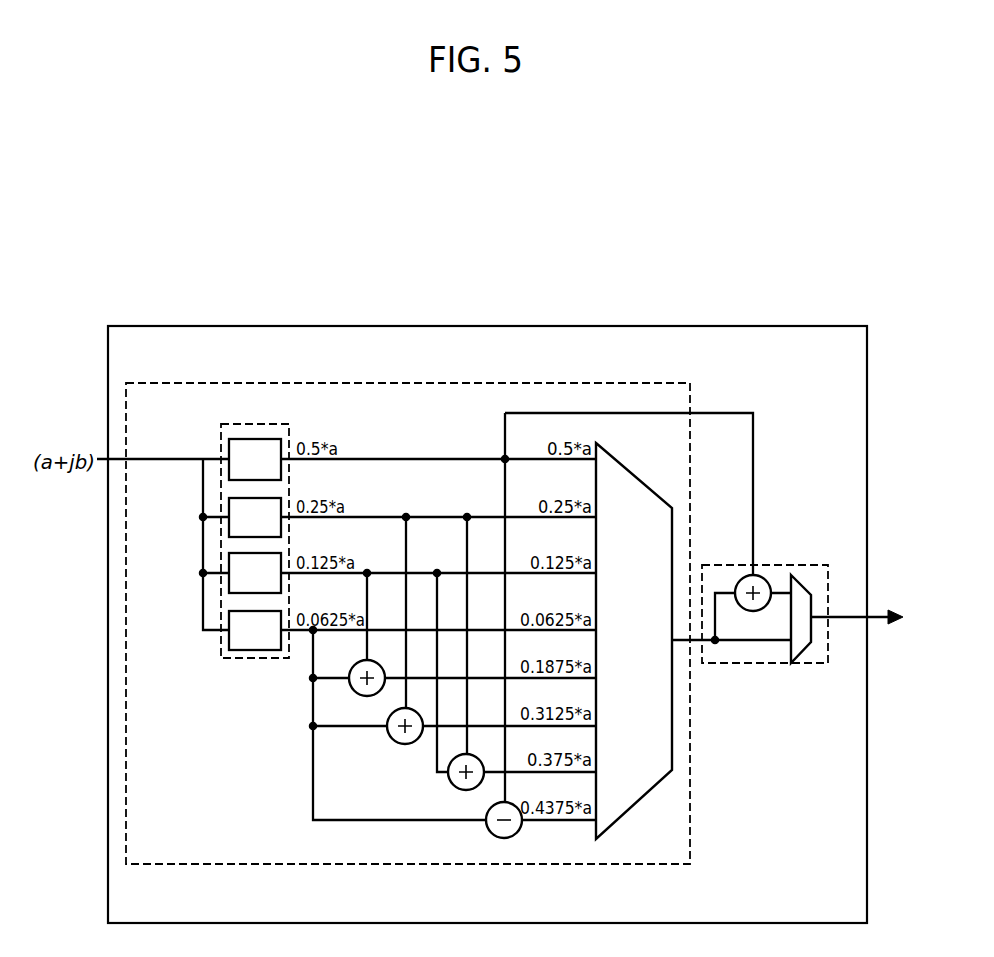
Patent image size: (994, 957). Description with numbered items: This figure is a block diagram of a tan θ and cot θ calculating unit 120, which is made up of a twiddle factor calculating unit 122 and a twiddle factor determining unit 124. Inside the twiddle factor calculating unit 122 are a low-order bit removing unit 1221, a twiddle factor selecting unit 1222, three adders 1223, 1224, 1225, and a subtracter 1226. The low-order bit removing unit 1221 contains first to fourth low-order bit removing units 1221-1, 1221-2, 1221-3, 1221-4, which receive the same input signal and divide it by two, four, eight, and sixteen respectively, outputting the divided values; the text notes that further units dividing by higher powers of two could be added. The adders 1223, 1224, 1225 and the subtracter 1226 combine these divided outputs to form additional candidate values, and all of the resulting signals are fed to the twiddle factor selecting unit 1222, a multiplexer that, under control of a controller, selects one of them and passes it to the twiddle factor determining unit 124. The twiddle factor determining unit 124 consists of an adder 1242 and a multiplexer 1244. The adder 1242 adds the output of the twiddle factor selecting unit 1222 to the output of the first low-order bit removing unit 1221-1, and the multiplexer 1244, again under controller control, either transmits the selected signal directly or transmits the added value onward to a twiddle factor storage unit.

The tan θ and cot θ calculating unit 120 is at (858, 326).
The twiddle factor calculating unit 122 is at (460, 383).
The low-order bit removing unit 1221 is at (289, 424).
The first low-order bit removing unit 1221-1 is at (229, 447).
The second low-order bit removing unit 1221-2 is at (229, 505).
The third low-order bit removing unit 1221-3 is at (229, 561).
The fourth low-order bit removing unit 1221-4 is at (229, 618).
The twiddle factor selecting unit 1222 is at (636, 474).
The adder 1223 is at (349, 689).
The adder 1224 is at (388, 741).
The adder 1225 is at (450, 784).
The subtracter 1226 is at (486, 829).
The twiddle factor determining unit 124 is at (815, 565).
The adder 1242 is at (764, 577).
The multiplexer 1244 is at (803, 649).